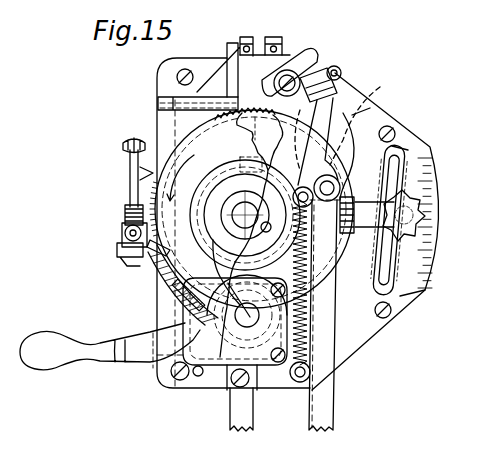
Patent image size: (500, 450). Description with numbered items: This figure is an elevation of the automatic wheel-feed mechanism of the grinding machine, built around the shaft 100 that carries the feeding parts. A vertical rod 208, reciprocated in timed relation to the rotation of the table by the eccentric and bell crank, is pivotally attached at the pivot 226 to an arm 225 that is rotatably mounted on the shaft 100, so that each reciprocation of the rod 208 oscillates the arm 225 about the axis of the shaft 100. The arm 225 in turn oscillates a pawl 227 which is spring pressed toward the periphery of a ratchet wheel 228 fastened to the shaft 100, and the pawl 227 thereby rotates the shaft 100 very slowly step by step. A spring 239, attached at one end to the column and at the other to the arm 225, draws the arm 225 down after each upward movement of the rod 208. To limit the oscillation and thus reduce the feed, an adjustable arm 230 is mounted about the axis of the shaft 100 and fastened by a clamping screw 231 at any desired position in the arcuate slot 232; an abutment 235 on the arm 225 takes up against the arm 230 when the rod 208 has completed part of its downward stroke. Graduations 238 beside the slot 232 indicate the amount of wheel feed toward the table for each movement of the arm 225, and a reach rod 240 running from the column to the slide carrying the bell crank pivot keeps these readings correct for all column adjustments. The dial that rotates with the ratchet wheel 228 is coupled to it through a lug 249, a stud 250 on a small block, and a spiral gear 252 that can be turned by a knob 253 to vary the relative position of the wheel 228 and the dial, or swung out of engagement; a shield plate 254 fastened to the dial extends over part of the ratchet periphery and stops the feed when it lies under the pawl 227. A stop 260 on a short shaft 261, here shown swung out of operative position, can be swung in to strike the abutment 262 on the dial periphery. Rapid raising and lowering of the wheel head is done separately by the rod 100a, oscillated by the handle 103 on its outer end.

The shaft 100 is at (220, 216).
The rod 100a is at (232, 350).
The handle 103 is at (63, 357).
The vertical rod 208 is at (338, 378).
The arm 225 is at (347, 143).
The pivotal attachment 226 is at (393, 148).
The pawl 227 is at (278, 62).
The ratchet wheel 228 is at (270, 140).
The adjustable arm 230 is at (365, 227).
The clamping screw 231 is at (410, 230).
The arcuate slot 232 is at (424, 292).
The abutment 235 is at (352, 115).
The graduations 238 is at (420, 182).
The spring 239 is at (298, 364).
The reach rod 240 is at (228, 423).
The lug 249 is at (118, 246).
The stud 250 is at (123, 236).
The spiral gear 252 is at (125, 214).
The knob 253 is at (122, 146).
The shield plate 254 is at (170, 284).
The stop 260 is at (226, 44).
The short shaft 261 is at (158, 103).
The abutment 262 is at (183, 323).